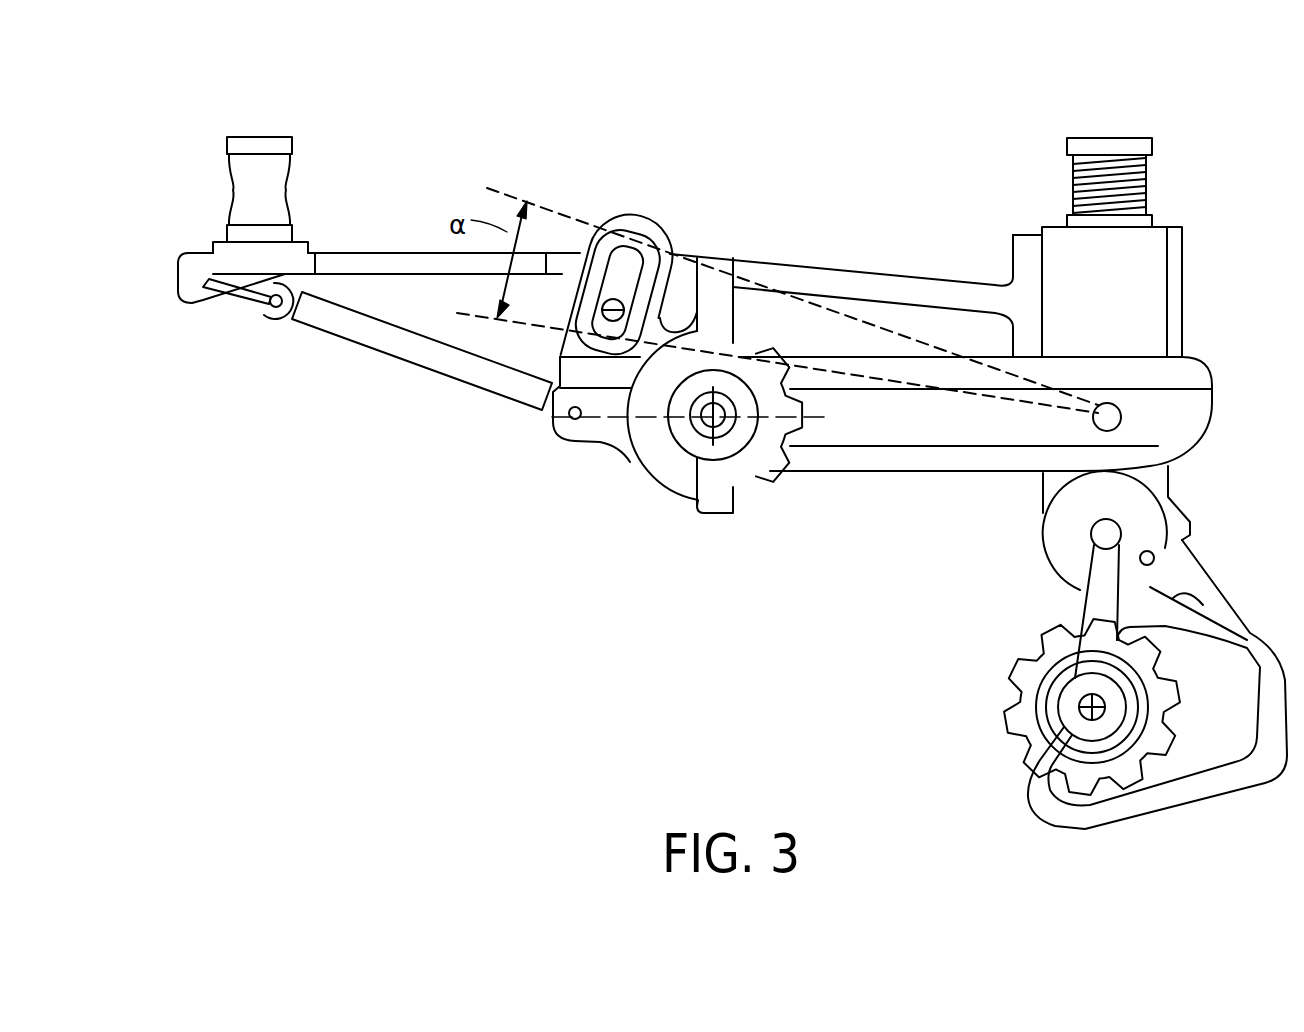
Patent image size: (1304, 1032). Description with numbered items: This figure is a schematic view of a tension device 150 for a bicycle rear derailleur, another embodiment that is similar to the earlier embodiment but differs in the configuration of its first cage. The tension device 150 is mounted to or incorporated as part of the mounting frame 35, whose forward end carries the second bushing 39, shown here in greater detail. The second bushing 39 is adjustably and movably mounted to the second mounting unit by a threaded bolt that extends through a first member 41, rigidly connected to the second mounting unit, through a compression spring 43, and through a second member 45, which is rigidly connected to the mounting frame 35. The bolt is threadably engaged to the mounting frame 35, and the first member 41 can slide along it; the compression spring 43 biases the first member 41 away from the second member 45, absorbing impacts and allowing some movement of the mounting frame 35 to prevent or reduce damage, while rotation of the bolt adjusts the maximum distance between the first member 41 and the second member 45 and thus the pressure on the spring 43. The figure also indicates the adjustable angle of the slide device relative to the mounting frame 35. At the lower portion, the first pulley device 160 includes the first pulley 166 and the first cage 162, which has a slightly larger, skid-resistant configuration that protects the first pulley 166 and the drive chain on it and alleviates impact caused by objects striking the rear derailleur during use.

The mounting frame 35 is at (795, 267).
The second bushing 39 is at (1188, 169).
The first member 41 is at (1126, 138).
The compression spring 43 is at (1073, 168).
The second member 45 is at (1153, 216).
The tension device 150 is at (425, 693).
The first pulley device 160 is at (923, 722).
The first cage 162 is at (1033, 800).
The first pulley 166 is at (1040, 636).